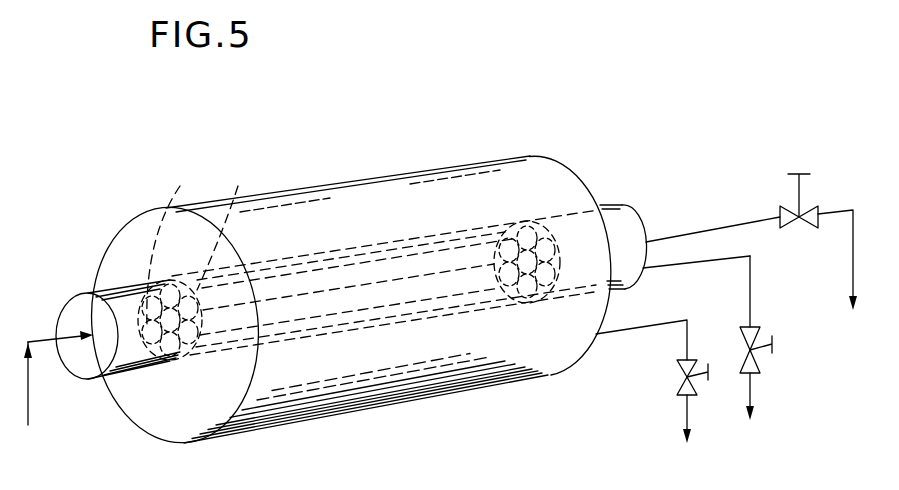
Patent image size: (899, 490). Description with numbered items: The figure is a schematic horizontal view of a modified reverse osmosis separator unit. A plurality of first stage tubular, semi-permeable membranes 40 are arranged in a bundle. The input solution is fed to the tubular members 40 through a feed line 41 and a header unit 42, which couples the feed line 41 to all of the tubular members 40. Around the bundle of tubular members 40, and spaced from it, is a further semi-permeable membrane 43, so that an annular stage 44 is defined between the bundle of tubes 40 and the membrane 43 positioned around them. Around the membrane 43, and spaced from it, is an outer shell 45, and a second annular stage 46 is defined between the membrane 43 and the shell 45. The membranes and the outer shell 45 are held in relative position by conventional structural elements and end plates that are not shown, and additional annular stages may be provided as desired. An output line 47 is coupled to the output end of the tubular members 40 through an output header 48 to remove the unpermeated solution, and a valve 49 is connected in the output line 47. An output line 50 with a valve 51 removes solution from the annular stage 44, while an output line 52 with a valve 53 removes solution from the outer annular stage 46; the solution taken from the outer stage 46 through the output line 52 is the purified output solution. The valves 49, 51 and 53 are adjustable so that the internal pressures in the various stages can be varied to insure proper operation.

The tubular semi-permeable membranes 40 is at (200, 338).
The feed line 41 is at (30, 387).
The header unit 42 is at (64, 306).
The semi-permeable membrane 43 is at (177, 241).
The annular stage 44 is at (229, 224).
The outer shell 45 is at (342, 184).
The second annular stage 46 is at (128, 417).
The output line 47 is at (674, 240).
The output header 48 is at (601, 204).
The valve 49 is at (801, 201).
The output line 50 is at (752, 283).
The valve 51 is at (759, 364).
The output line 52 is at (683, 418).
The valve 53 is at (678, 381).